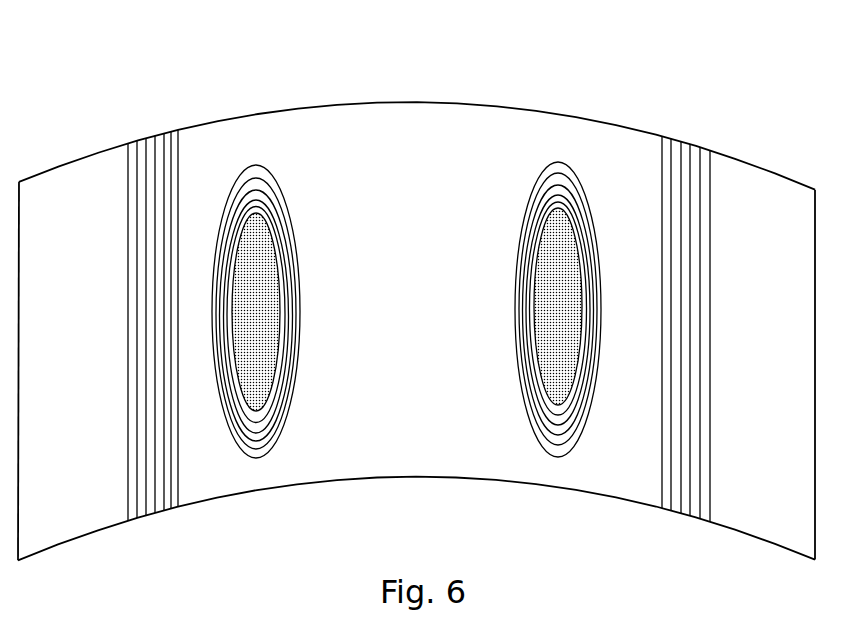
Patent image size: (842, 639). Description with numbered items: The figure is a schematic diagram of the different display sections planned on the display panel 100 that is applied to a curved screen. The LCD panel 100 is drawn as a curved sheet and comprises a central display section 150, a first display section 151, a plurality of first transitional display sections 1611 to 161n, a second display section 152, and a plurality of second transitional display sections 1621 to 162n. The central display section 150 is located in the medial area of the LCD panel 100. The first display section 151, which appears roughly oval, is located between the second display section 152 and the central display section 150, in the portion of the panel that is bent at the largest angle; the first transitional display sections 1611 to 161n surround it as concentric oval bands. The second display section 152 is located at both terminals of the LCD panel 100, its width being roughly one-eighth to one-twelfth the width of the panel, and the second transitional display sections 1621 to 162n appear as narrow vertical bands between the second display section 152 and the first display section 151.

The display panel 100 is at (415, 99).
The central display section 150 is at (440, 247).
The first display section 151 is at (258, 248).
The second display section 152 is at (55, 225).
The first transitional display section 1611 is at (258, 207).
The first transitional display section 161n is at (253, 173).
The second transitional display section 1621 is at (175, 162).
The second transitional display section 162n is at (134, 163).